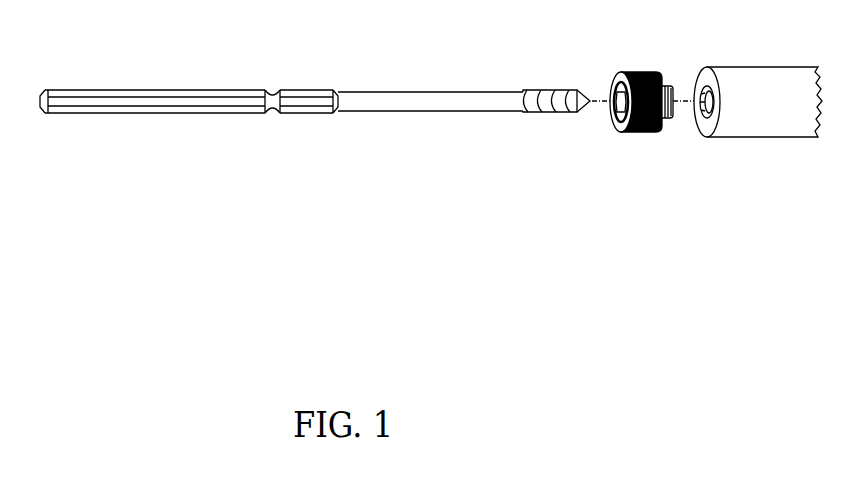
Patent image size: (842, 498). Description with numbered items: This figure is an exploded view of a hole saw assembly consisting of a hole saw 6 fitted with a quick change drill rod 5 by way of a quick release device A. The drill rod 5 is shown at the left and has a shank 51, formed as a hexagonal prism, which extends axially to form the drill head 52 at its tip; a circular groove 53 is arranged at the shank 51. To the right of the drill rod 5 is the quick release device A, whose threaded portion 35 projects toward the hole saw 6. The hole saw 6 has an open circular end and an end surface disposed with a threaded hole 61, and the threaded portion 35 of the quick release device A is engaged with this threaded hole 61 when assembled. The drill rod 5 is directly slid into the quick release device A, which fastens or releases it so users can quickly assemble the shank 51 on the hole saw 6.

The drill rod 5 is at (315, 103).
The shank 51 is at (218, 96).
The drill head 52 is at (554, 110).
The circular groove 53 is at (274, 113).
The quick release device A is at (663, 95).
The threaded portion 35 is at (673, 118).
The hole saw 6 is at (753, 117).
The threaded hole 61 is at (703, 86).